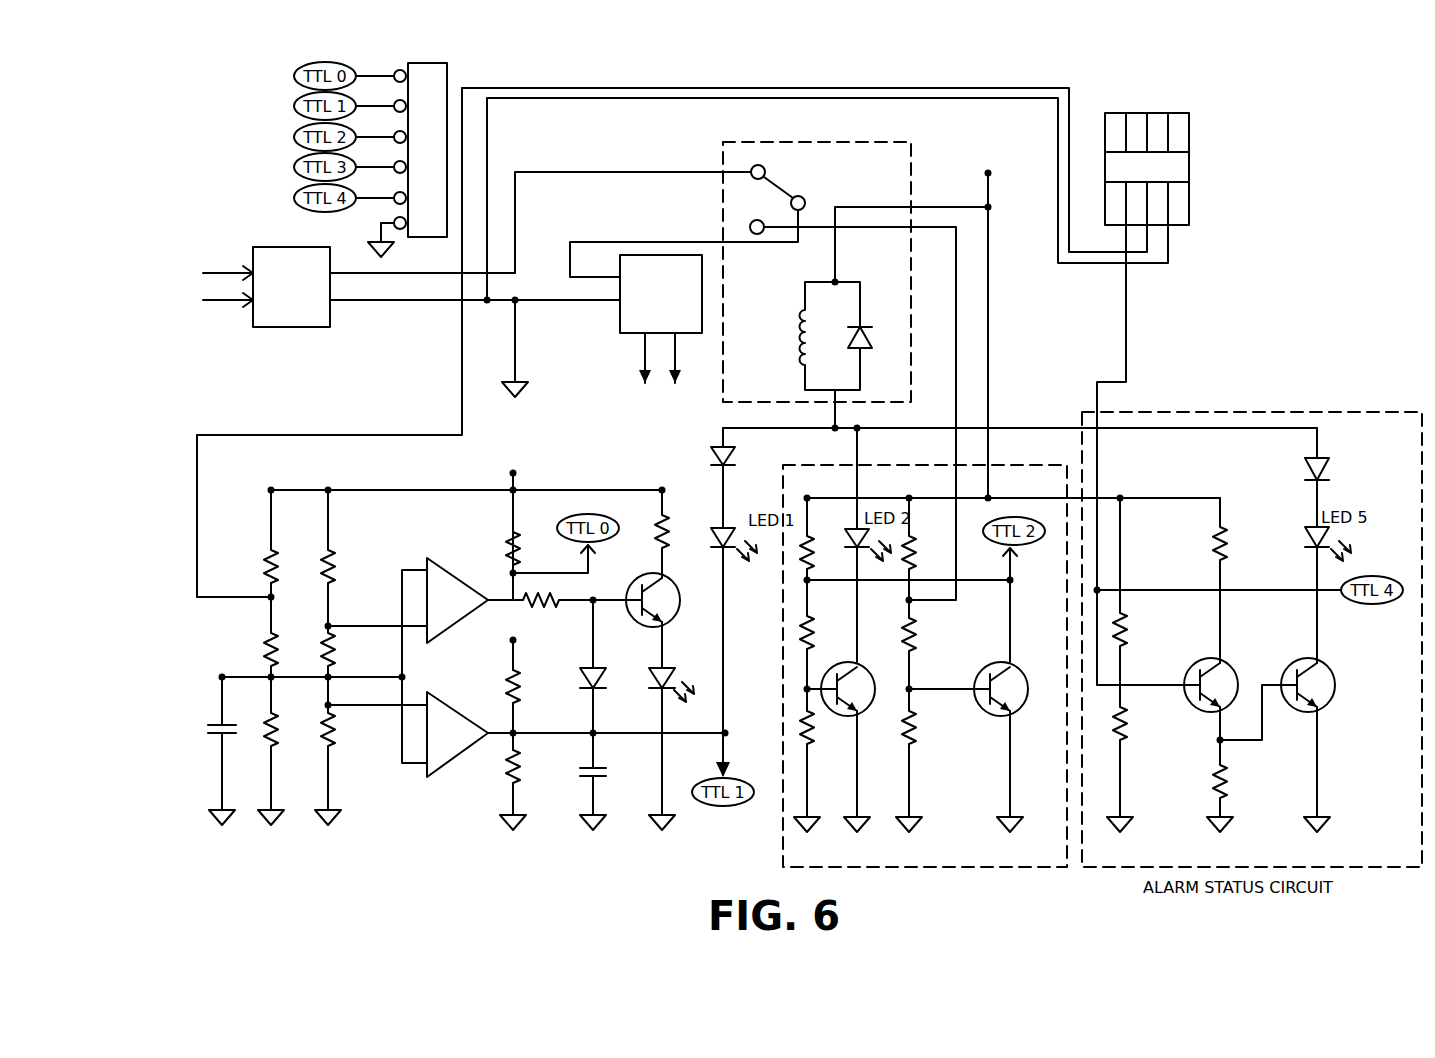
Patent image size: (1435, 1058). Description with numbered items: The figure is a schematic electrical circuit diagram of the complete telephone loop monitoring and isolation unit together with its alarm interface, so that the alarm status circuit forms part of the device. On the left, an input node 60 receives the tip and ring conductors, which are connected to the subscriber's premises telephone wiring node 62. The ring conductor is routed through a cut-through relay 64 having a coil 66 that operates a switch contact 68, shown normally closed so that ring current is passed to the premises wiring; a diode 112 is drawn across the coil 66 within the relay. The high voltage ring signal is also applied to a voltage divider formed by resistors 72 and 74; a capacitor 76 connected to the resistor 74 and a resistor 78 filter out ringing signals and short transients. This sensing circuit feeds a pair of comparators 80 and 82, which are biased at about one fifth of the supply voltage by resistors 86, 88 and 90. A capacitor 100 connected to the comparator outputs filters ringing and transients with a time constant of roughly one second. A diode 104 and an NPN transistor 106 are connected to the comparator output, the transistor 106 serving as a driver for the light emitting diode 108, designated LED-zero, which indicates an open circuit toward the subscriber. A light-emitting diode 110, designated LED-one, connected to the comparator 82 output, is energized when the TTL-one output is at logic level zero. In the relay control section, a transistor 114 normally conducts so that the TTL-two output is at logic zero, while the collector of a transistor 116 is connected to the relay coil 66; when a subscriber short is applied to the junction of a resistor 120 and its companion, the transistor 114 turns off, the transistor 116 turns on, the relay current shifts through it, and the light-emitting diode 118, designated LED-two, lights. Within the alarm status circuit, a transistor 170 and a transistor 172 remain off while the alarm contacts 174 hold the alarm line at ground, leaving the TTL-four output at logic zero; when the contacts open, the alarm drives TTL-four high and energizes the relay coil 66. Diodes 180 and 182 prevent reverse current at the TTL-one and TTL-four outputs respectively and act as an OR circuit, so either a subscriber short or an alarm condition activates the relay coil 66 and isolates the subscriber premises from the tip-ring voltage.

The input node 60 is at (290, 328).
The subscriber's premises telephone wiring node 62 is at (617, 318).
The cut-through relay 64 is at (912, 145).
The relay coil 66 is at (796, 322).
The switch contact 68 is at (782, 183).
The resistor 72 is at (283, 569).
The resistor 74 is at (262, 652).
The capacitor 76 is at (217, 736).
The resistor 78 is at (283, 731).
The comparator 80 is at (471, 583).
The comparator 82 is at (466, 716).
The resistor 86 is at (318, 568).
The resistor 88 is at (318, 651).
The resistor 90 is at (318, 737).
The capacitor 100 is at (598, 779).
The diode 104 is at (582, 666).
The NPN transistor 106 is at (673, 586).
The light emitting diode 108 is at (650, 666).
The light-emitting diode 110 is at (718, 520).
The diode 112 is at (870, 346).
The transistor 114 is at (974, 696).
The transistor 116 is at (874, 672).
The light-emitting diode 118 is at (855, 525).
The resistor 120 is at (916, 550).
The transistor 170 is at (1232, 668).
The transistor 172 is at (1333, 662).
The alarm contacts 174 is at (1190, 170).
The diode 180 is at (736, 454).
The diode 182 is at (1325, 458).